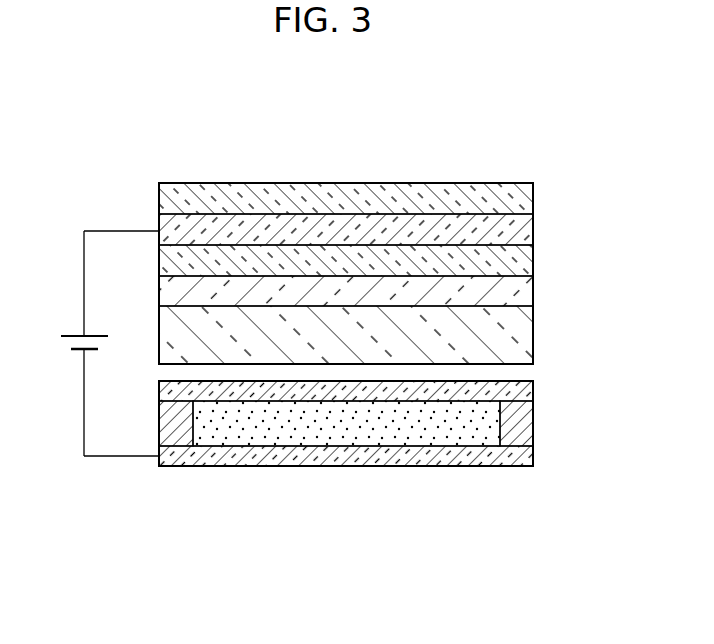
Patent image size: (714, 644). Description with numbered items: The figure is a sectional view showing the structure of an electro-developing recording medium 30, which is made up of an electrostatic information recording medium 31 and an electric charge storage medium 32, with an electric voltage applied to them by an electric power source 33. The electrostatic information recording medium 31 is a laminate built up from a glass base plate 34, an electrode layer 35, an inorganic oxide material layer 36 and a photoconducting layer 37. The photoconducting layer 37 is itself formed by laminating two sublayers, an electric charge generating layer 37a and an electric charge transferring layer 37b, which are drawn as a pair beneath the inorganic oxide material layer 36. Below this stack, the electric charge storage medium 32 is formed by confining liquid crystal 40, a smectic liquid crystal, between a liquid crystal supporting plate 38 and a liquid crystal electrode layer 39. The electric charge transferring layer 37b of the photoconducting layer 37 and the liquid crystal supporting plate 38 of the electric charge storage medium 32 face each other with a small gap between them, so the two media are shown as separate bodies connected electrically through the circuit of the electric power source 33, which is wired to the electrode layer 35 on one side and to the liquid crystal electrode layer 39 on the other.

The electro-developing recording medium 30 is at (85, 470).
The electrostatic information recording medium 31 is at (384, 253).
The electric charge storage medium 32 is at (346, 464).
The electric power source 33 is at (77, 352).
The glass base plate 34 is at (478, 199).
The electrode layer 35 is at (306, 224).
The inorganic oxide material layer 36 is at (536, 268).
The photoconducting layer 37 is at (384, 320).
The electric charge generating layer 37a is at (527, 290).
The electric charge transferring layer 37b is at (384, 352).
The liquid crystal supporting plate 38 is at (285, 395).
The liquid crystal electrode layer 39 is at (478, 438).
The liquid crystal 40 is at (387, 420).